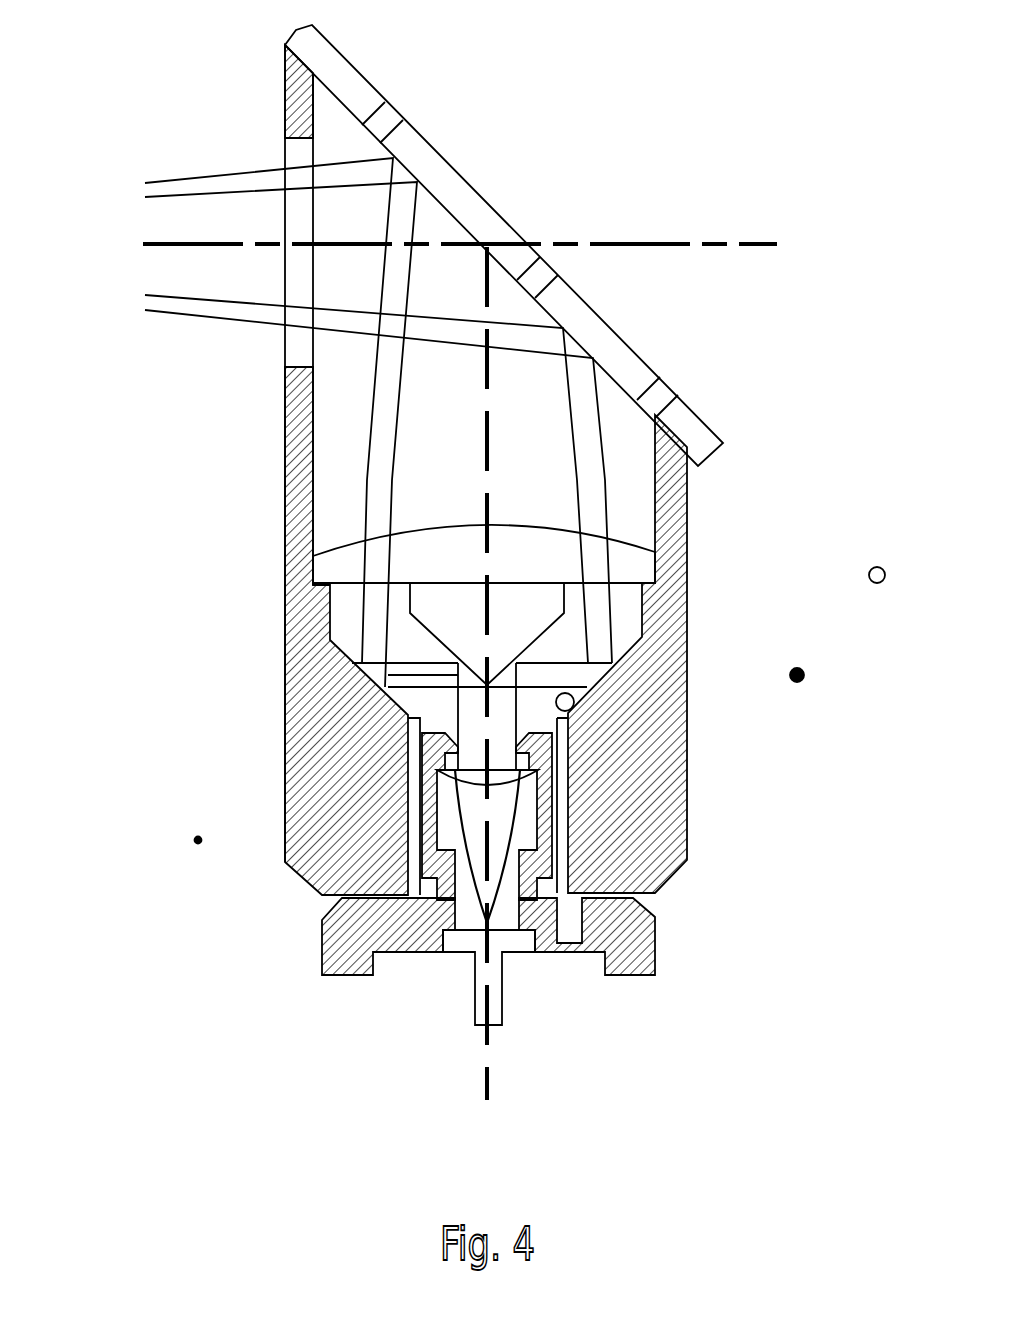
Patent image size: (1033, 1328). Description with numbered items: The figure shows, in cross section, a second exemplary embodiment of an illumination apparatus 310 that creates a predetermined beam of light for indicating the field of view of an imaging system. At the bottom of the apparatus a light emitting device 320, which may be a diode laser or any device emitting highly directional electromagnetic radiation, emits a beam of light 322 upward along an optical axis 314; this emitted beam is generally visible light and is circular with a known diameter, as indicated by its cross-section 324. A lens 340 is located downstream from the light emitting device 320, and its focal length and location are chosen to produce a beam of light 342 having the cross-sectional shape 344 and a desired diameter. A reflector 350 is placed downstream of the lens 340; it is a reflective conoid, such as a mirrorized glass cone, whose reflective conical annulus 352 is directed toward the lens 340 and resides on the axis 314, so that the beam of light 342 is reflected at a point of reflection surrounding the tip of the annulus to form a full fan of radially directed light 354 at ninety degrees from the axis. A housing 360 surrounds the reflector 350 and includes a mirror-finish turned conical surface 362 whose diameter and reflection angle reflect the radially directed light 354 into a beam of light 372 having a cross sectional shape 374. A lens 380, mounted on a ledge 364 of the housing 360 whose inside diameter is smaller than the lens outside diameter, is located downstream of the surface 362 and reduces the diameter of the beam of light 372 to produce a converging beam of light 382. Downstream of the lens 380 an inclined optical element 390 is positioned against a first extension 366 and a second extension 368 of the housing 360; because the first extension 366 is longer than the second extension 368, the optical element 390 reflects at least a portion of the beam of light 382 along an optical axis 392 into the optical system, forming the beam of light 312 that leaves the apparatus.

The illumination apparatus 310 is at (540, 100).
The beam of light 312 is at (165, 198).
The optical axis 314 is at (493, 1050).
The light emitting device 320 is at (513, 943).
The beam of light 322 is at (480, 878).
The cross-section 324 is at (195, 840).
The lens 340 is at (523, 777).
The beam of light 342 is at (505, 712).
The cross-sectional shape 344 is at (805, 672).
The reflector 350 is at (425, 633).
The reflective conical annulus 352 is at (322, 707).
The radially directed light 354 is at (562, 675).
The housing 360 is at (295, 622).
The surface 362 is at (574, 704).
The ledge 364 is at (322, 580).
The first extension 366 is at (290, 102).
The second extension 368 is at (672, 528).
The beam of light 372 is at (600, 607).
The cross sectional shape 374 is at (868, 575).
The lens 380 is at (633, 558).
The beam of light 382 is at (580, 405).
The optical element 390 is at (610, 338).
The optical axis 392 is at (643, 240).